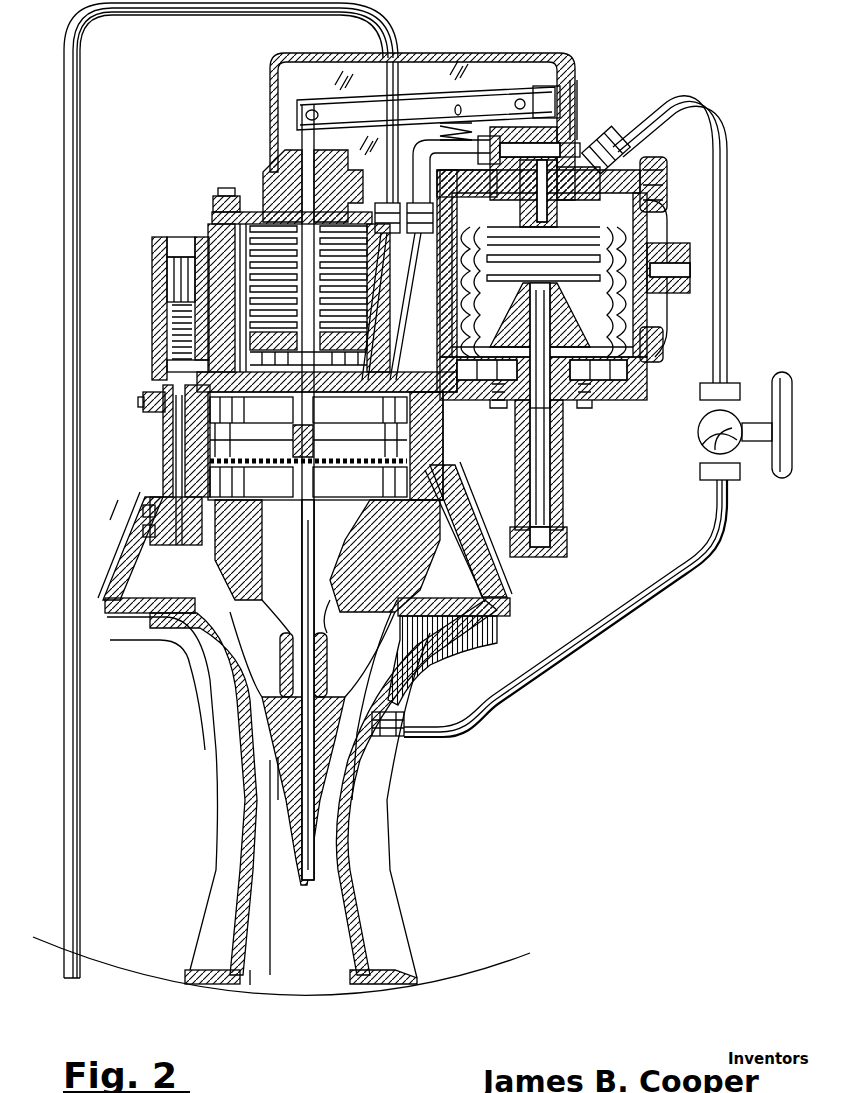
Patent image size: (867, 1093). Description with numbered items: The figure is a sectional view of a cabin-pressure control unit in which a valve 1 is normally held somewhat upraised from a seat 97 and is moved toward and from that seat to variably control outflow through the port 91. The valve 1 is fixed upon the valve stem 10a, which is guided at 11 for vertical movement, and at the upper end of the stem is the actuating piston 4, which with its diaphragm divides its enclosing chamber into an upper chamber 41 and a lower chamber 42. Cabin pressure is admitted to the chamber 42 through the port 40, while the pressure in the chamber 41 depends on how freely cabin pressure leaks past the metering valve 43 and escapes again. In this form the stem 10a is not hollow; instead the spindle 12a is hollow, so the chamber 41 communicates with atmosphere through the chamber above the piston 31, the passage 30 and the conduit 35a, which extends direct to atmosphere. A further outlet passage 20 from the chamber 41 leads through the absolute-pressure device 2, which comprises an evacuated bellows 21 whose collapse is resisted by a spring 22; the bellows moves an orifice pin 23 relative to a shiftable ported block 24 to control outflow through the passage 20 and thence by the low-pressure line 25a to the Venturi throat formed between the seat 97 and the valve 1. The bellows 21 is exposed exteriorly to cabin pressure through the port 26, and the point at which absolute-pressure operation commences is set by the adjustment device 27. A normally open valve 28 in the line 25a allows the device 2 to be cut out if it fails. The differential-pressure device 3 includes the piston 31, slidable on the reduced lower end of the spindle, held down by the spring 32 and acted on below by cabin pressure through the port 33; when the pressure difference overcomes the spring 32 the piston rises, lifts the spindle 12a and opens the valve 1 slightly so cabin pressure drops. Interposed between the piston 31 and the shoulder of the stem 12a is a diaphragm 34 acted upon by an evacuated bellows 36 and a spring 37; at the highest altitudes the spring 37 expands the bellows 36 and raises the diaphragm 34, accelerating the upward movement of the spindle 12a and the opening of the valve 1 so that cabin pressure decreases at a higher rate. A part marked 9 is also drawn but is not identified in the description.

The valve 1 is at (207, 647).
The absolute-pressure device 2 is at (658, 247).
The differential-pressure device 3 is at (252, 214).
The actuating piston 4 is at (163, 440).
The base ring 9 is at (171, 980).
The valve stem 10a is at (318, 510).
The guide 11 is at (316, 527).
The hollow spindle 12a is at (384, 380).
The outlet passage 20 is at (395, 343).
The evacuated bellows 21 is at (652, 323).
The spring 22 is at (660, 215).
The orifice pin 23 is at (580, 130).
The shiftable orifice block 24 is at (578, 100).
The low-pressure line 25a is at (728, 353).
The port 26 is at (640, 270).
The adjustment device 27 is at (566, 486).
The valve 28 is at (700, 442).
The port 30 is at (372, 218).
The piston 31 is at (253, 446).
The spring 32 is at (213, 217).
The port 33 is at (178, 356).
The diaphragm 34 is at (168, 265).
The conduit 35a is at (80, 168).
The evacuated bellows 36 is at (178, 300).
The spring 37 is at (178, 326).
The port 40 is at (150, 472).
The chamber 41 is at (360, 412).
The chamber 42 is at (360, 482).
The metering valve 43 is at (150, 415).
The port 91 is at (334, 988).
The seat 97 is at (235, 697).